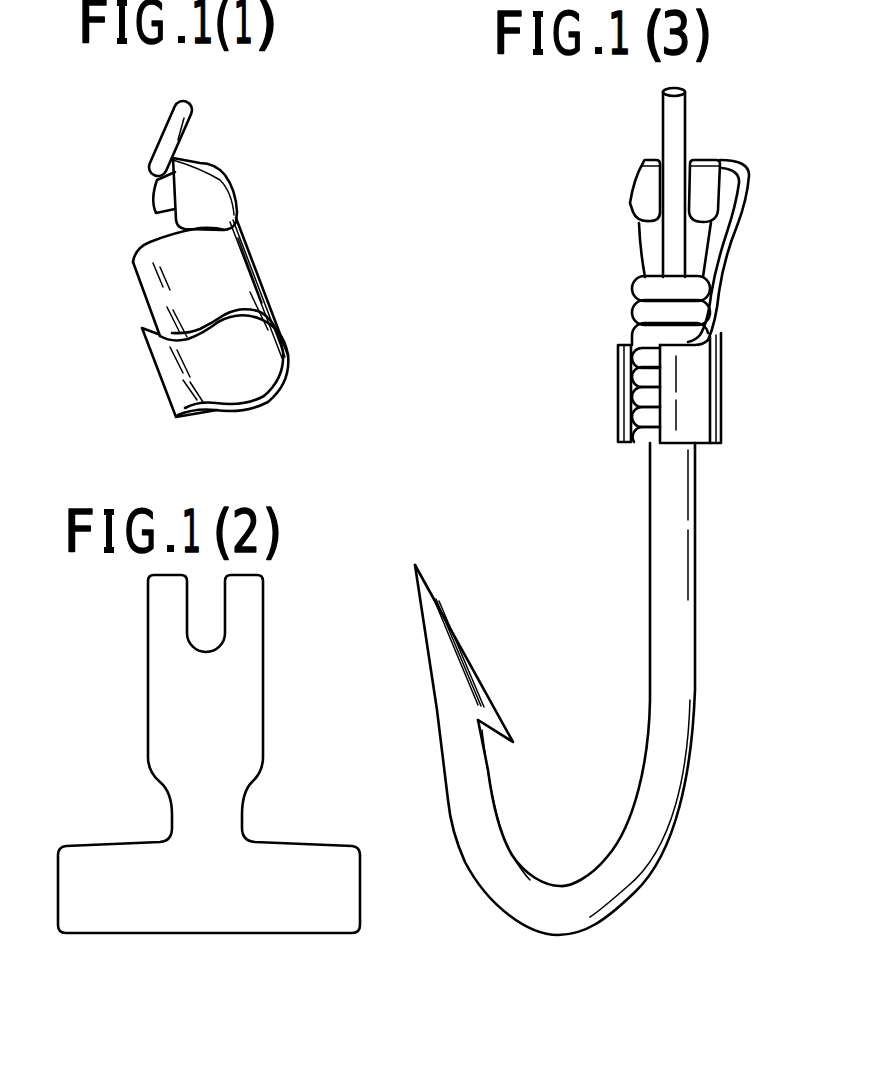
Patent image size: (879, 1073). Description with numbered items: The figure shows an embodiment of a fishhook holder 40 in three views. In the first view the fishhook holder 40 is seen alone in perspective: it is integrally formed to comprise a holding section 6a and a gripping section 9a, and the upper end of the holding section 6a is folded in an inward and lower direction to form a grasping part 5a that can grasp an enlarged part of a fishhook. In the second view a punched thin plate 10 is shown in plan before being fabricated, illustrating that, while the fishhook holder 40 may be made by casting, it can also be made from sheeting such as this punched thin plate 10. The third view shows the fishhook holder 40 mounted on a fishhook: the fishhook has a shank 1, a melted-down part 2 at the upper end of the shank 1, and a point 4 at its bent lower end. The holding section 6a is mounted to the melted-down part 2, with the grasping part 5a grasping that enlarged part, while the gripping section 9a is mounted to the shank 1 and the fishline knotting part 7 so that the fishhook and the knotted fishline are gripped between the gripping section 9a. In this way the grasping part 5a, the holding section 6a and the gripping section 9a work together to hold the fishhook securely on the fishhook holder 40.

In FIG. 13, the shank 1 is at (586, 511).
In FIG. 13, the melted-down part 2 is at (707, 233).
In FIG. 13, the point 4 is at (455, 667).
In FIG. 11, the grasping part 5a is at (157, 143).
In FIG. 13, the grasping part 5a is at (638, 184).
In FIG. 11, the holding section 6a is at (193, 187).
In FIG. 13, the holding section 6a is at (745, 163).
In FIG. 13, the fishline knotting part 7 is at (643, 312).
In FIG. 11, the gripping section 9a is at (247, 280).
In FIG. 13, the gripping section 9a is at (700, 383).
In FIG. 12, the punched thin plate 10 is at (264, 678).
In FIG. 11, the fishhook holder 40 is at (193, 259).
In FIG. 13, the fishhook holder 40 is at (712, 370).